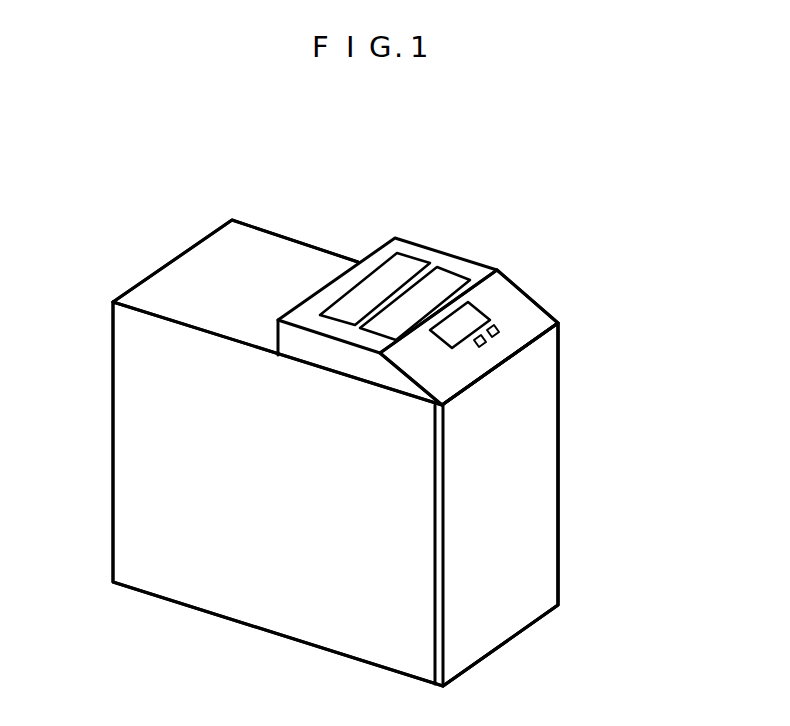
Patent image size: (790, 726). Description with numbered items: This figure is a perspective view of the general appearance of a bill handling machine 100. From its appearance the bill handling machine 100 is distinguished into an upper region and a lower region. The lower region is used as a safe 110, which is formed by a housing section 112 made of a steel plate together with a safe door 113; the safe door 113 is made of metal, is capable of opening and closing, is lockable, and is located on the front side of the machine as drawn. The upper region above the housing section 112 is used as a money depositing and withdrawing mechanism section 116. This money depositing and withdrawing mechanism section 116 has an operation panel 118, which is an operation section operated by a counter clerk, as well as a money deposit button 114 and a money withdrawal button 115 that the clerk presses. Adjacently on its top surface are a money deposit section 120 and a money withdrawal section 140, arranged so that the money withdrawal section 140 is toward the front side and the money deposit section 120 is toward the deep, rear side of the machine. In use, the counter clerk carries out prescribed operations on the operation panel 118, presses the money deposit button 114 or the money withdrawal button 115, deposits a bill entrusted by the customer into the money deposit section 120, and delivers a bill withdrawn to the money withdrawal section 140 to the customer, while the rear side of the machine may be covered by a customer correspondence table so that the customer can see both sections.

The bill handling machine 100 is at (560, 647).
The safe 110 is at (210, 577).
The housing section 112 is at (160, 292).
The safe door 113 is at (537, 515).
The money deposit button 114 is at (486, 344).
The money withdrawal button 115 is at (500, 333).
The money depositing and withdrawing mechanism section 116 is at (527, 317).
The operation panel 118 is at (477, 313).
The money deposit section 120 is at (408, 267).
The money withdrawal section 140 is at (453, 282).